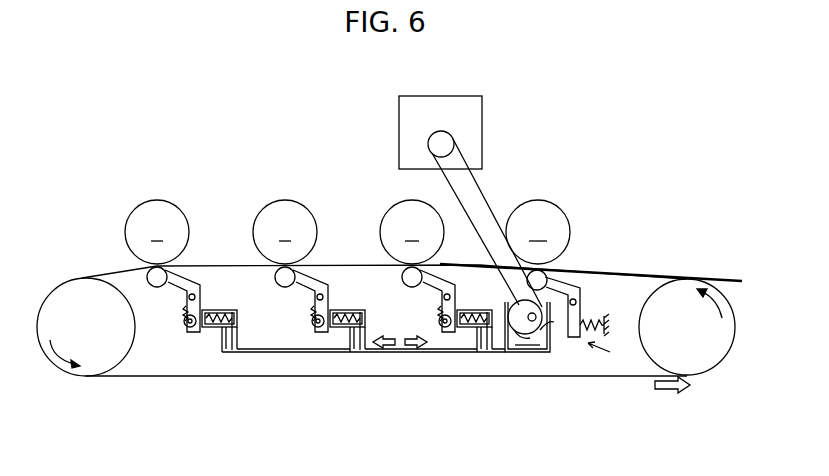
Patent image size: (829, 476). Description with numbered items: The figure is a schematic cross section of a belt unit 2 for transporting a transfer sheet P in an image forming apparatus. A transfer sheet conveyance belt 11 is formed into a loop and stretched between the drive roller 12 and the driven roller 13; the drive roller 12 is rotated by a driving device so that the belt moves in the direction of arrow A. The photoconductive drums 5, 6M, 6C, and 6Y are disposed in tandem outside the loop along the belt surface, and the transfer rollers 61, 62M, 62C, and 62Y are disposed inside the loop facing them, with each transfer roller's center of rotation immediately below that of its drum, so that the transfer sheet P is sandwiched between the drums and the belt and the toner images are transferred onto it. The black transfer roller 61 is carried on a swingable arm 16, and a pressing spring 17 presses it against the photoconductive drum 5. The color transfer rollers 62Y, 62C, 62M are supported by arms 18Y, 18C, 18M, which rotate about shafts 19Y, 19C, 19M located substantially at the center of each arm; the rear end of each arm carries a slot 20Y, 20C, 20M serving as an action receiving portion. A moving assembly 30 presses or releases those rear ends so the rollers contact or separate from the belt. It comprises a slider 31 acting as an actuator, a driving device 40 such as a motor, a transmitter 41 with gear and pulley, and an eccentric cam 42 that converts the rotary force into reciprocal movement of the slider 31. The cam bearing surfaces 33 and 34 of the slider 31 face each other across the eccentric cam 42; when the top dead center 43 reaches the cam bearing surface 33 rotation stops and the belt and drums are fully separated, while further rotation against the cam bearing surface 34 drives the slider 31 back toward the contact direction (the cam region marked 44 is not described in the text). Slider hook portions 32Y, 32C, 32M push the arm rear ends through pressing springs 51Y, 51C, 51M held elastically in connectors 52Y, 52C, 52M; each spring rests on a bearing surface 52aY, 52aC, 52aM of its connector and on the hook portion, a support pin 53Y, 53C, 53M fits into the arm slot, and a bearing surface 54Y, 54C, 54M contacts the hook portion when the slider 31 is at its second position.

The belt unit 2 is at (618, 107).
The photoconductive drum 5 is at (551, 206).
The photoconductive drum 6Y is at (145, 205).
The photoconductive drum 6C is at (273, 205).
The photoconductive drum 6M is at (400, 205).
The transfer sheet conveyance belt 11 is at (142, 377).
The drive roller 12 is at (706, 362).
The driven roller 13 is at (64, 287).
The arm 16 is at (581, 301).
The pressing spring 17 is at (598, 325).
The arm 18Y is at (195, 268).
The arm 18C is at (323, 268).
The arm 18M is at (450, 268).
The shaft 19Y is at (196, 296).
The shaft 19C is at (324, 296).
The shaft 19M is at (451, 296).
The slot 20Y is at (185, 323).
The slot 20C is at (313, 323).
The slot 20M is at (440, 322).
The moving assembly 30 is at (609, 354).
The slider 31 is at (536, 322).
The slider hook portion 32Y is at (228, 353).
The slider hook portion 32C is at (356, 353).
The slider hook portion 32M is at (482, 353).
The cam bearing surface 33 is at (553, 330).
The cam bearing surface 34 is at (515, 333).
The driving device 40 is at (399, 111).
The transmitter 41 is at (479, 188).
The eccentric cam 42 is at (549, 342).
The top dead center 43 is at (528, 338).
The engaging portion 44 is at (544, 322).
The pressing spring 51Y is at (223, 340).
The pressing spring 51C is at (351, 340).
The pressing spring 51M is at (478, 340).
The connector 52Y is at (208, 328).
The connector 52C is at (336, 328).
The connector 52M is at (463, 328).
The bearing surface 52aY is at (208, 313).
The bearing surface 52aC is at (336, 313).
The bearing surface 52aM is at (463, 313).
The support pin 53Y is at (184, 312).
The support pin 53C is at (312, 312).
The support pin 53M is at (439, 312).
The bearing surface 54Y is at (234, 346).
The bearing surface 54C is at (362, 346).
The bearing surface 54M is at (489, 346).
The transfer roller 61 is at (552, 276).
The transfer roller 62Y is at (147, 272).
The transfer roller 62C is at (275, 272).
The transfer roller 62M is at (402, 272).
The transfer sheet P is at (720, 279).
The arrow A is at (672, 394).